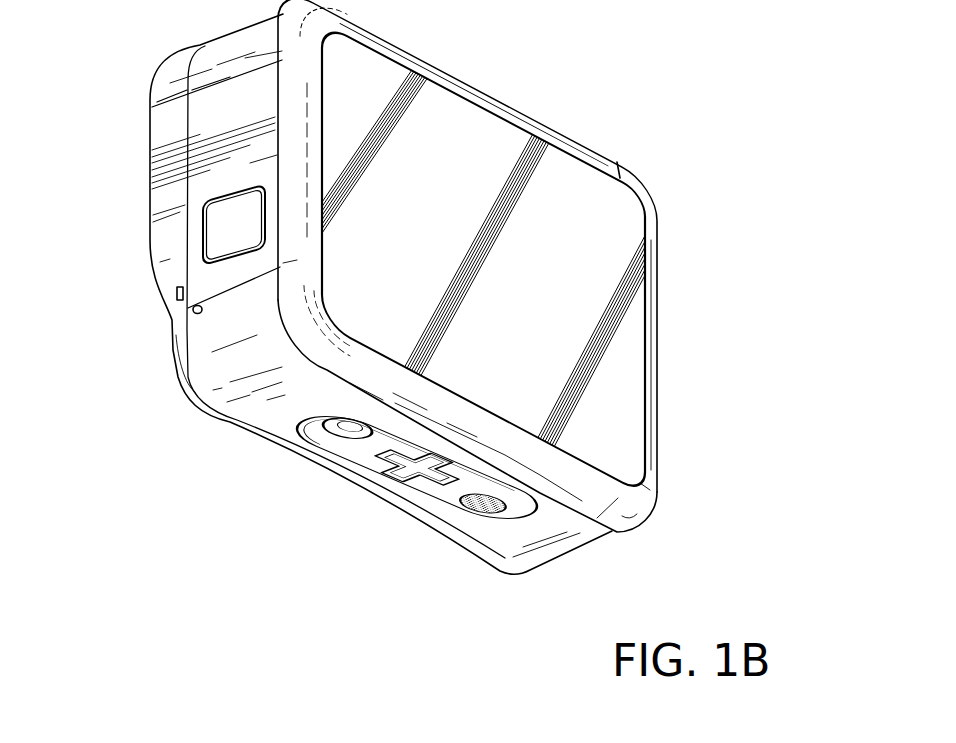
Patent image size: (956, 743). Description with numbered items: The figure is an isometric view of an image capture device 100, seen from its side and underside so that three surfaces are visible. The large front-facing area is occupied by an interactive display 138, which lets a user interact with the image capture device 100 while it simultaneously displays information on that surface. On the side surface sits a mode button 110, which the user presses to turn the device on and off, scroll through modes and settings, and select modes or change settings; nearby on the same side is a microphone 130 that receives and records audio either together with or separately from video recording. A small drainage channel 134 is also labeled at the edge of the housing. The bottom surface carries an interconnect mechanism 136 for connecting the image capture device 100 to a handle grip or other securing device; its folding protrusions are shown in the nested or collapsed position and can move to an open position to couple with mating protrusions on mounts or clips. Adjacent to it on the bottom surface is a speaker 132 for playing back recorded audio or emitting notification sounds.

The image capture device 100 is at (648, 80).
The mode button 110 is at (217, 230).
The drainage channel 134 is at (177, 291).
The microphone 130 is at (193, 311).
The interactive display 138 is at (620, 382).
The interconnect mechanism 136 is at (348, 448).
The speaker 132 is at (481, 512).